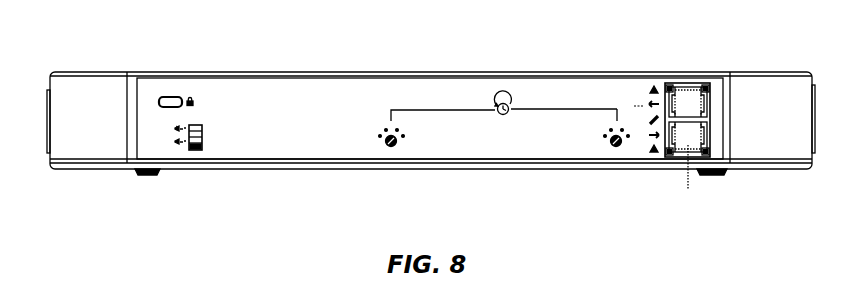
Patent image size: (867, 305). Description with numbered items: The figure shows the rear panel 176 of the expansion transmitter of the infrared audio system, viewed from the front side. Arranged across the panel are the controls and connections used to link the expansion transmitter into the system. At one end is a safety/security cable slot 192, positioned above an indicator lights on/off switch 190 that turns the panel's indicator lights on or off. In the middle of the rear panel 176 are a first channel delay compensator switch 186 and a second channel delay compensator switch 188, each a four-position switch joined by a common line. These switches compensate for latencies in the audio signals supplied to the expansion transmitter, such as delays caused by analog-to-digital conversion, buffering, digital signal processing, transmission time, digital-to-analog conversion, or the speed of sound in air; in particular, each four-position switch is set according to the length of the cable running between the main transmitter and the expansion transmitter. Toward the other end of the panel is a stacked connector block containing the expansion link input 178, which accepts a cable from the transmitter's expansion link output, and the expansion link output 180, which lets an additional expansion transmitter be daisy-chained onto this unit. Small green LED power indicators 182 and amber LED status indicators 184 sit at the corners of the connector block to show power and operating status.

The rear panel 176 is at (282, 100).
The expansion link input 178 is at (686, 111).
The expansion link output 180 is at (681, 122).
The green LED power indicators 182 is at (670, 87).
The amber LED status indicators 184 is at (705, 87).
The first channel delay compensator switch 186 is at (398, 132).
The second channel delay compensator switch 188 is at (607, 132).
The indicator lights on/off switch 190 is at (195, 150).
The safety/security cable slot 192 is at (175, 95).